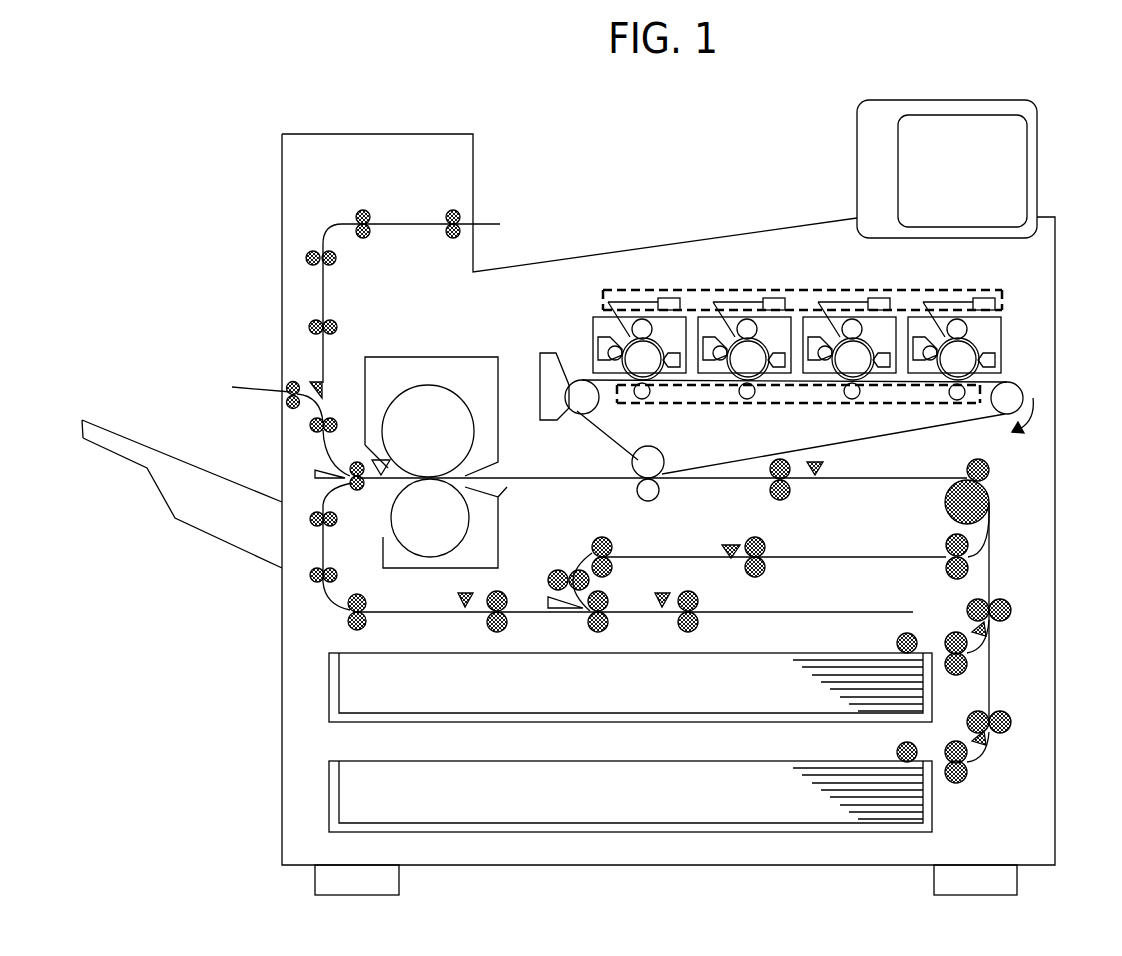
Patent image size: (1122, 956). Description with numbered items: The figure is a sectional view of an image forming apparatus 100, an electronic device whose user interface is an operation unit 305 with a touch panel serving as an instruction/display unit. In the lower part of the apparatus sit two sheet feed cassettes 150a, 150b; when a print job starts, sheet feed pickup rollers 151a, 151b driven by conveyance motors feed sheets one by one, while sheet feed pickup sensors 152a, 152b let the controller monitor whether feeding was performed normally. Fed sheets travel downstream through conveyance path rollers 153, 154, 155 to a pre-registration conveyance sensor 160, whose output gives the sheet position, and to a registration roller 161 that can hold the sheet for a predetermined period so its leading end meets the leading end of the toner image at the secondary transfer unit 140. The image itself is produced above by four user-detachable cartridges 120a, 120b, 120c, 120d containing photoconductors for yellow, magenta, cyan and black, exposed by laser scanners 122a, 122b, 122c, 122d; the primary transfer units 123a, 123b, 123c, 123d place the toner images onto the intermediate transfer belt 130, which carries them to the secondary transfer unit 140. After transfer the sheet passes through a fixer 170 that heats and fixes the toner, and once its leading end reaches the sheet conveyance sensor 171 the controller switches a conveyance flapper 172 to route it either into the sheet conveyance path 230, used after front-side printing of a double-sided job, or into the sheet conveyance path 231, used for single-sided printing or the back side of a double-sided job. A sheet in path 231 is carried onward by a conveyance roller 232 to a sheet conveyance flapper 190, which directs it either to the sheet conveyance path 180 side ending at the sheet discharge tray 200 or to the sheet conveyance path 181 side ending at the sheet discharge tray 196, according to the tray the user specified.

The image forming apparatus 100 is at (637, 925).
The operation unit 305 is at (1037, 150).
The sheet discharge tray 196 is at (483, 220).
The sheet conveyance path 181 is at (334, 326).
The sheet conveyance flapper 190 is at (312, 382).
The sheet conveyance path 180 is at (258, 389).
The conveyance roller 232 is at (310, 423).
The sheet conveyance path 231 is at (327, 452).
The conveyance flapper 172 is at (313, 480).
The sheet conveyance path 230 is at (322, 555).
The sheet discharge tray 200 is at (212, 472).
The fixer 170 is at (443, 387).
The sheet conveyance sensor 171 is at (380, 460).
The intermediate transfer belt 130 is at (757, 458).
The secondary transfer unit 140 is at (637, 489).
The cartridge 120a is at (602, 292).
The cartridge 120b is at (706, 291).
The cartridge 120c is at (812, 292).
The cartridge 120d is at (926, 303).
The laser scanner 122a is at (655, 298).
The laser scanner 122b is at (760, 298).
The laser scanner 122c is at (868, 298).
The laser scanner 122d is at (975, 298).
The primary transfer unit 123a is at (645, 399).
The primary transfer unit 123b is at (750, 399).
The primary transfer unit 123c is at (855, 399).
The primary transfer unit 123d is at (957, 400).
The pre-registration conveyance sensor 160 is at (823, 470).
The registration roller 161 is at (790, 475).
The conveyance path roller 155 is at (989, 502).
The conveyance path roller 154 is at (1012, 610).
The conveyance path roller 153 is at (1012, 722).
The sheet feed pickup sensor 152a is at (983, 748).
The sheet feed pickup sensor 152b is at (990, 636).
The sheet feed pickup roller 151a is at (897, 752).
The sheet feed pickup roller 151b is at (897, 643).
The sheet feed cassette 150a is at (582, 822).
The sheet feed cassette 150b is at (582, 712).